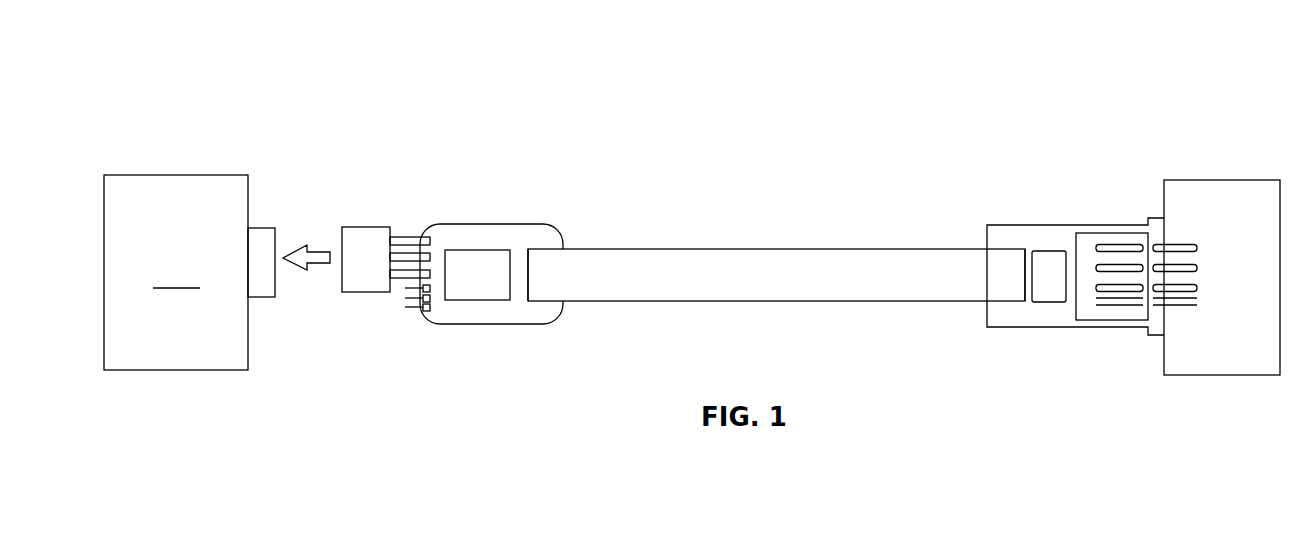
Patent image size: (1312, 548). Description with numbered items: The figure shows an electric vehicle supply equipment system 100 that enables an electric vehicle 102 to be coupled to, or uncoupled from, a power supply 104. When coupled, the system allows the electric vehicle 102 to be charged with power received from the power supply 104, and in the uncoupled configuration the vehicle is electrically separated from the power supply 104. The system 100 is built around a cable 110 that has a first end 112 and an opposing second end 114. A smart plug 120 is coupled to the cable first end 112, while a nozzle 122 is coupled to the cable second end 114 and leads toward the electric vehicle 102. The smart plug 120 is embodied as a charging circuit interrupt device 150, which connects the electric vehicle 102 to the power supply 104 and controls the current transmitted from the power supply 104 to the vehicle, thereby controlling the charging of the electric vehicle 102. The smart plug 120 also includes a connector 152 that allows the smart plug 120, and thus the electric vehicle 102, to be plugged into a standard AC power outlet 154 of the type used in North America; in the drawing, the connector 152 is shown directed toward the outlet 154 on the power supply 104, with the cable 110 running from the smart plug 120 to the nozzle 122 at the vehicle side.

The electric vehicle supply equipment (EVSE) system 100 is at (986, 38).
The electric vehicle 102 is at (1233, 180).
The power supply 104 is at (176, 272).
The cable 110 is at (757, 249).
The first end 112 is at (530, 273).
The second end 114 is at (1017, 261).
The smart plug 120 is at (495, 223).
The nozzle 122 is at (1025, 225).
The charging circuit interrupt device (CCID) 150 is at (437, 225).
The connector 152 is at (355, 227).
The standard AC power outlet 154 is at (262, 227).